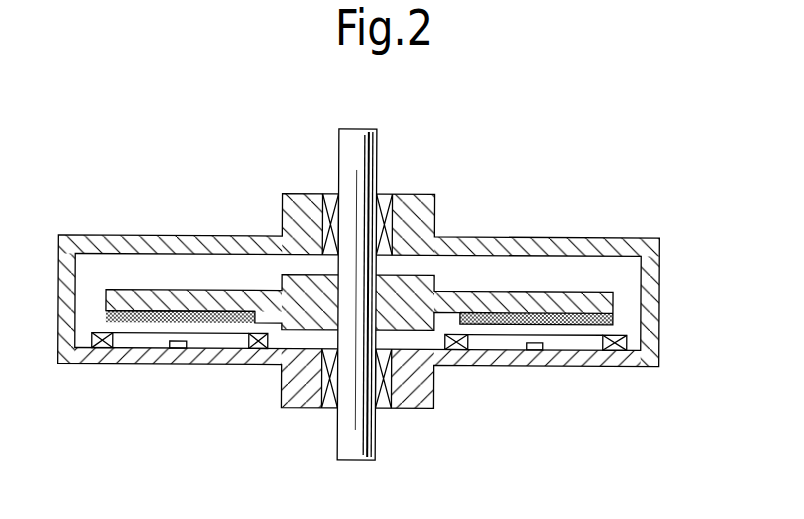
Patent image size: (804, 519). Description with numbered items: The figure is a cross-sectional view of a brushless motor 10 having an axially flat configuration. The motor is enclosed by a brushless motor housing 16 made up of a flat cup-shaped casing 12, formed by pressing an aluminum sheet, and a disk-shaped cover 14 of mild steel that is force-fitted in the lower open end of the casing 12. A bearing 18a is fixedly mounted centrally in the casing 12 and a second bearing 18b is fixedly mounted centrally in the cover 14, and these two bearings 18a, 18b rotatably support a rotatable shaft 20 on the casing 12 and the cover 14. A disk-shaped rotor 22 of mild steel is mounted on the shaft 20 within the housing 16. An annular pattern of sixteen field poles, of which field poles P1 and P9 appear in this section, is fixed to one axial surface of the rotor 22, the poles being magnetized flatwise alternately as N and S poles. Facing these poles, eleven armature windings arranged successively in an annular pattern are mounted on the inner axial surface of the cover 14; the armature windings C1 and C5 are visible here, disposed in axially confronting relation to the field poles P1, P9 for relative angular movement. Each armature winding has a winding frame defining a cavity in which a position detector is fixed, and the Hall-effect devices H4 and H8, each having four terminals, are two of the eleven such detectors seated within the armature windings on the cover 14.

The brushless motor 10 is at (469, 366).
The casing 12 is at (653, 258).
The cover 14 is at (508, 360).
The brushless motor housing 16 is at (237, 366).
The bearing 18a is at (385, 194).
The bearing 18b is at (383, 403).
The rotatable shaft 20 is at (372, 152).
The rotor 22 is at (547, 307).
The field pole P1 is at (587, 317).
The field pole P9 is at (133, 311).
The Hall-effect device H4 is at (542, 350).
The Hall-effect device H8 is at (179, 349).
The armature winding C1 is at (627, 342).
The armature winding C5 is at (257, 349).